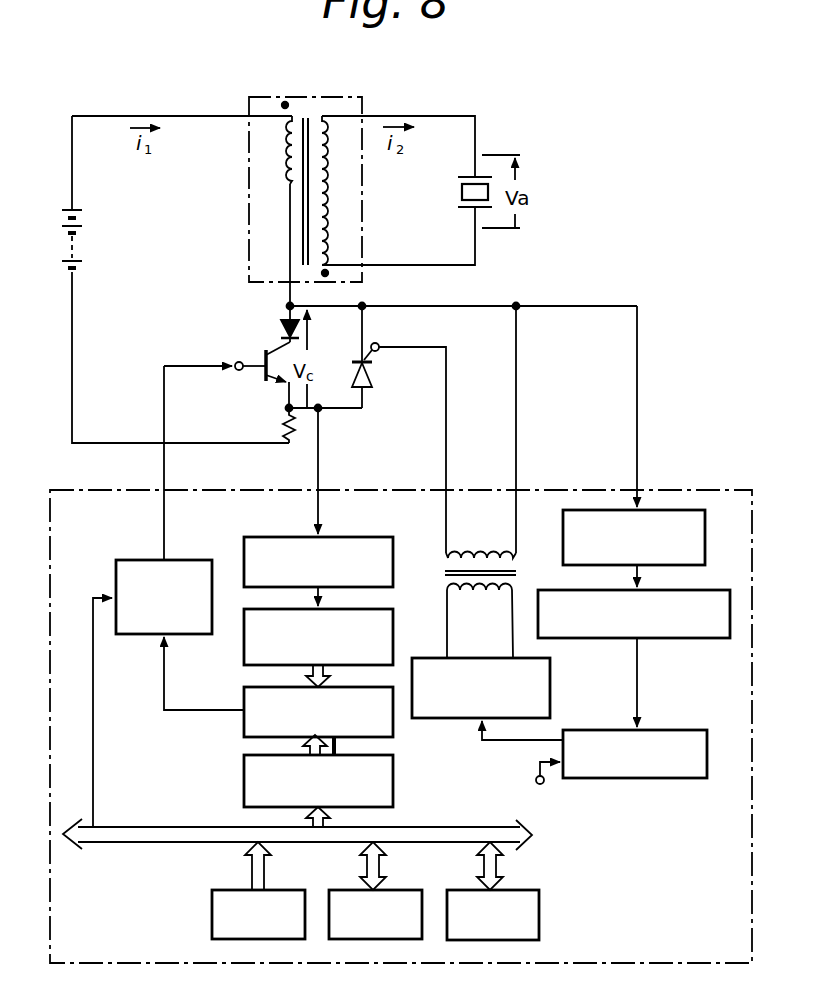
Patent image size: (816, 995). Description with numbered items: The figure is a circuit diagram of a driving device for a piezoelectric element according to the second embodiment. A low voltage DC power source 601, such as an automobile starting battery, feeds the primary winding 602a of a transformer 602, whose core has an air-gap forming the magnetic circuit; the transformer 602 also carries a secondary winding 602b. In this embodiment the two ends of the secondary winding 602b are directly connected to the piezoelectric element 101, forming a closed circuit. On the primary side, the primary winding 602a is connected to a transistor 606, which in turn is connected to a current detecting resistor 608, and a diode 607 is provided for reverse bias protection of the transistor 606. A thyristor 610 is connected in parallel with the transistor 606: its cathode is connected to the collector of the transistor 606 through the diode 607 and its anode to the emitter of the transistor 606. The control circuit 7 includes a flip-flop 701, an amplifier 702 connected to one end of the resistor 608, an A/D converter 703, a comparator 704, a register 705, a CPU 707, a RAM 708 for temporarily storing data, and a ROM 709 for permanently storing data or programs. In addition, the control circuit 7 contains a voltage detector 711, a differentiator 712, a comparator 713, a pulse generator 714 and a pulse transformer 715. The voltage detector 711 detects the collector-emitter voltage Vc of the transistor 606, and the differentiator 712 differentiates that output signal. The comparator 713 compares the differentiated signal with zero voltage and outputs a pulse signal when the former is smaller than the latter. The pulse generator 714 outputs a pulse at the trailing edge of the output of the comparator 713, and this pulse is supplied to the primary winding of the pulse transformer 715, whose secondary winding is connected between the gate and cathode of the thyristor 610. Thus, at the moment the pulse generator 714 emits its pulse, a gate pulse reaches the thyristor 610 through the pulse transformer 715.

The piezoelectric element 101 is at (458, 188).
The low voltage DC power source 601 is at (85, 229).
The transformer 602 is at (302, 163).
The primary winding 602a is at (285, 172).
The secondary winding 602b is at (329, 170).
The transistor 606 is at (261, 354).
The diode 607 is at (278, 330).
The current detecting resistor 608 is at (279, 429).
The thyristor 610 is at (357, 362).
The control circuit 7 is at (564, 488).
The flip-flop 701 is at (128, 637).
The amplifier 702 is at (373, 532).
The analog-digital converter 703 is at (244, 652).
The comparator 704 is at (244, 727).
The register 705 is at (244, 785).
The CPU 707 is at (541, 884).
The RAM 708 is at (446, 884).
The ROM 709 is at (285, 883).
The voltage detector 711 is at (680, 508).
The differentiator 712 is at (690, 640).
The comparator 713 is at (665, 780).
The pulse generator 714 is at (440, 720).
The pulse transformer 715 is at (437, 572).